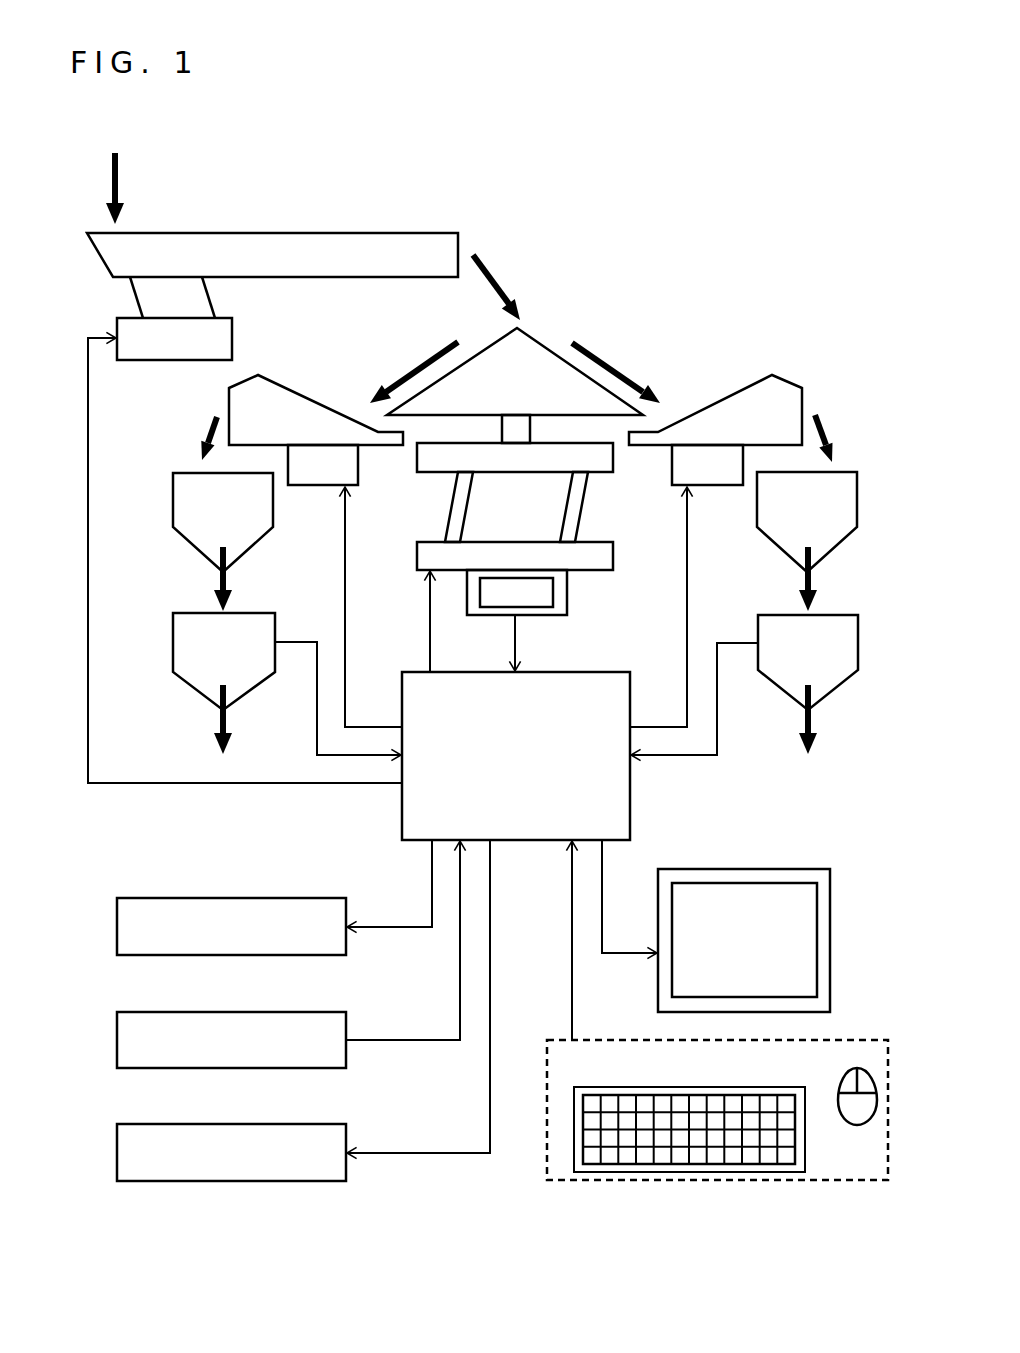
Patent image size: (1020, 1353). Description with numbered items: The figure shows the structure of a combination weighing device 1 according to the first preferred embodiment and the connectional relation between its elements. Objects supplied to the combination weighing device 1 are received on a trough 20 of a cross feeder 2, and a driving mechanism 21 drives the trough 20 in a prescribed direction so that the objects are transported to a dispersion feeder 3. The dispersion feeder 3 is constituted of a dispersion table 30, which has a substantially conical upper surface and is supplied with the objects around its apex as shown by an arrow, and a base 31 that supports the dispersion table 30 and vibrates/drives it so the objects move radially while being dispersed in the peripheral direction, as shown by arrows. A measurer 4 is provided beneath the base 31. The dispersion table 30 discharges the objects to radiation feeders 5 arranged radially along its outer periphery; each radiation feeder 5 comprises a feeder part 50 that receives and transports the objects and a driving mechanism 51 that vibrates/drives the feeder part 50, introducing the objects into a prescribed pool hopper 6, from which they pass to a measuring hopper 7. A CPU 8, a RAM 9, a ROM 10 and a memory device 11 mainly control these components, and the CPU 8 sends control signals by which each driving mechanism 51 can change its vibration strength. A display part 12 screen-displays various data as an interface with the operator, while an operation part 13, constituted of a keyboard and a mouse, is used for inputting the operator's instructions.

The combination weighing device 1 is at (197, 129).
The cross feeder 2 is at (402, 216).
The trough 20 is at (316, 233).
The driving mechanism 21 is at (232, 342).
The dispersion feeder 3 is at (622, 342).
The dispersion table 30 is at (540, 342).
The base 31 is at (452, 505).
The measurer 4 is at (567, 588).
The radiation feeder 5 is at (332, 385).
The feeder part 50 is at (229, 400).
The driving mechanism 51 is at (318, 486).
The pool hopper 6 is at (195, 548).
The measuring hopper 7 is at (250, 693).
The CPU 8 is at (630, 795).
The RAM 9 is at (117, 927).
The ROM 10 is at (117, 1040).
The memory device 11 is at (117, 1153).
The display part 12 is at (760, 869).
The operation part 13 is at (822, 1180).